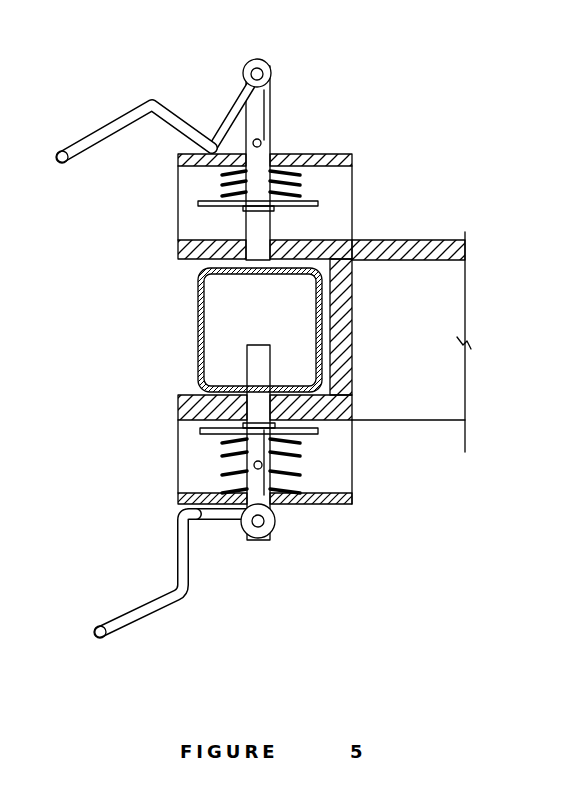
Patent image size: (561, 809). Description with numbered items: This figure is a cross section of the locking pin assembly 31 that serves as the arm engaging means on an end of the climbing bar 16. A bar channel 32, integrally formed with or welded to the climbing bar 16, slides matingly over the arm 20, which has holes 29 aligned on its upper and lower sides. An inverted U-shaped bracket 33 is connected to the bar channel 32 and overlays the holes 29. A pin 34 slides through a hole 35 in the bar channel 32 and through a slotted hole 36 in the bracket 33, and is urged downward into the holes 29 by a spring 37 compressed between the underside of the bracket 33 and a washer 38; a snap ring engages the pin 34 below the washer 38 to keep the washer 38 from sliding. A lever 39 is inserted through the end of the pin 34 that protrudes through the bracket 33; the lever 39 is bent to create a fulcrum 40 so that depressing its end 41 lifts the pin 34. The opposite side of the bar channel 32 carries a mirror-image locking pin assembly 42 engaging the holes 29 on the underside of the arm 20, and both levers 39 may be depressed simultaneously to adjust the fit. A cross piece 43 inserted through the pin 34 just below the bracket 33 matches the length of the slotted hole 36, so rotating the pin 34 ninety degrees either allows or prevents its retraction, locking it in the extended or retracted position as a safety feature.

The climbing bar 16 is at (445, 237).
The arm 20 is at (198, 330).
The holes 29 is at (245, 378).
The locking pin assembly 31 is at (348, 114).
The bar channel 32 is at (355, 390).
The bracket 33 is at (354, 158).
The pin 34 is at (270, 105).
The hole 35 is at (247, 236).
The slotted hole 36 is at (272, 152).
The spring 37 is at (224, 173).
The washer 38 is at (320, 203).
The lever 39 is at (155, 97).
The fulcrum 40 is at (230, 130).
The end 41 is at (74, 142).
The locking pin assembly 42 is at (350, 580).
The cross piece 43 is at (264, 140).